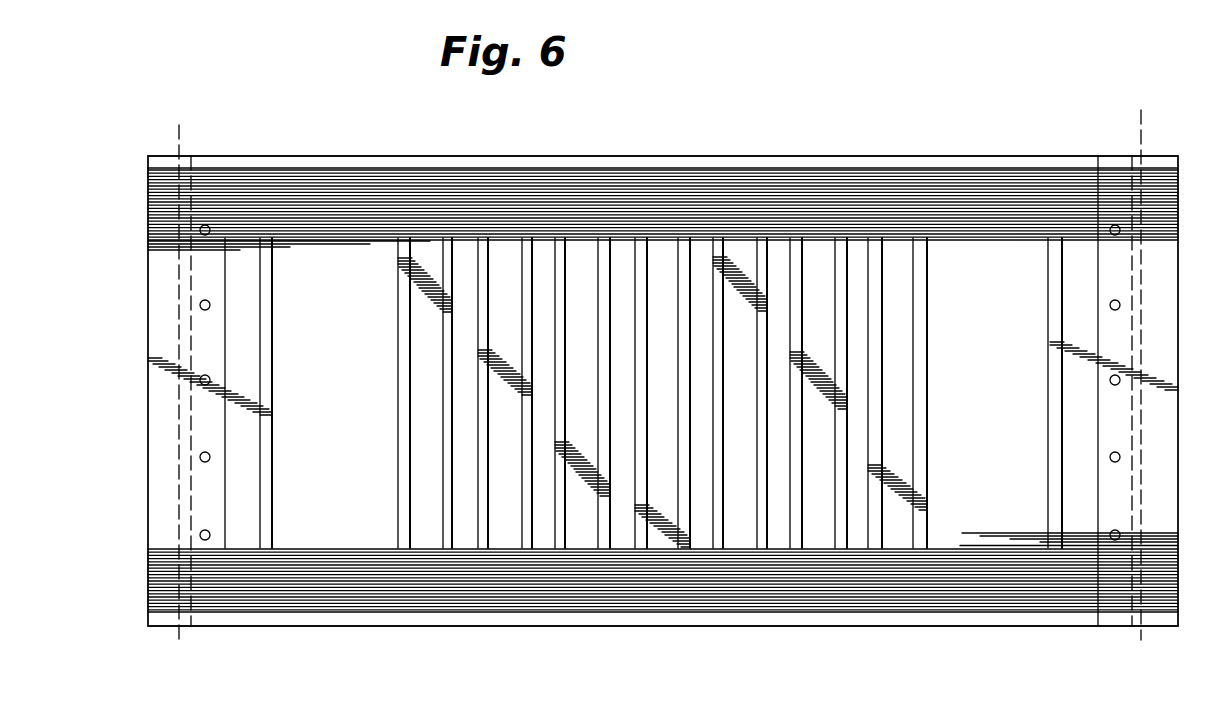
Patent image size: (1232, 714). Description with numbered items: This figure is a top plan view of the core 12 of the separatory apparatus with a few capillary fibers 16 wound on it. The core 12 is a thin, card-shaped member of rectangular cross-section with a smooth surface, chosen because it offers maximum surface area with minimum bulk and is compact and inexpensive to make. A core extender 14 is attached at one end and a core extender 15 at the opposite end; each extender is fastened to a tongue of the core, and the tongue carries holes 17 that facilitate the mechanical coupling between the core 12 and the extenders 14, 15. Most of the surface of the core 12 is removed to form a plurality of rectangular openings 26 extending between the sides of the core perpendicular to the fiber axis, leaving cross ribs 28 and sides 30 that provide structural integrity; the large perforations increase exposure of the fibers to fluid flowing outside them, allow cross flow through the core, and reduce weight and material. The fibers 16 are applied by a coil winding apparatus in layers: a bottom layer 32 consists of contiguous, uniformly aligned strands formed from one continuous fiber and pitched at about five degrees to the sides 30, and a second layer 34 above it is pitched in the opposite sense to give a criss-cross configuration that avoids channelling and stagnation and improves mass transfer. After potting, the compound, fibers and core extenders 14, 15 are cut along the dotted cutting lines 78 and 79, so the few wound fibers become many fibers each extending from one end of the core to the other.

The core 12 is at (891, 153).
The core extender 14 is at (1178, 632).
The core extender 15 is at (222, 632).
The capillary fibers 16 is at (312, 196).
The holes 17 is at (198, 380).
The rectangular openings 26 is at (350, 522).
The cross ribs 28 is at (506, 250).
The sides 30 is at (683, 166).
The bottom layer 32 is at (1186, 160).
The second layer 34 is at (1186, 180).
The cutting line 78 is at (1141, 121).
The cutting line 79 is at (181, 142).